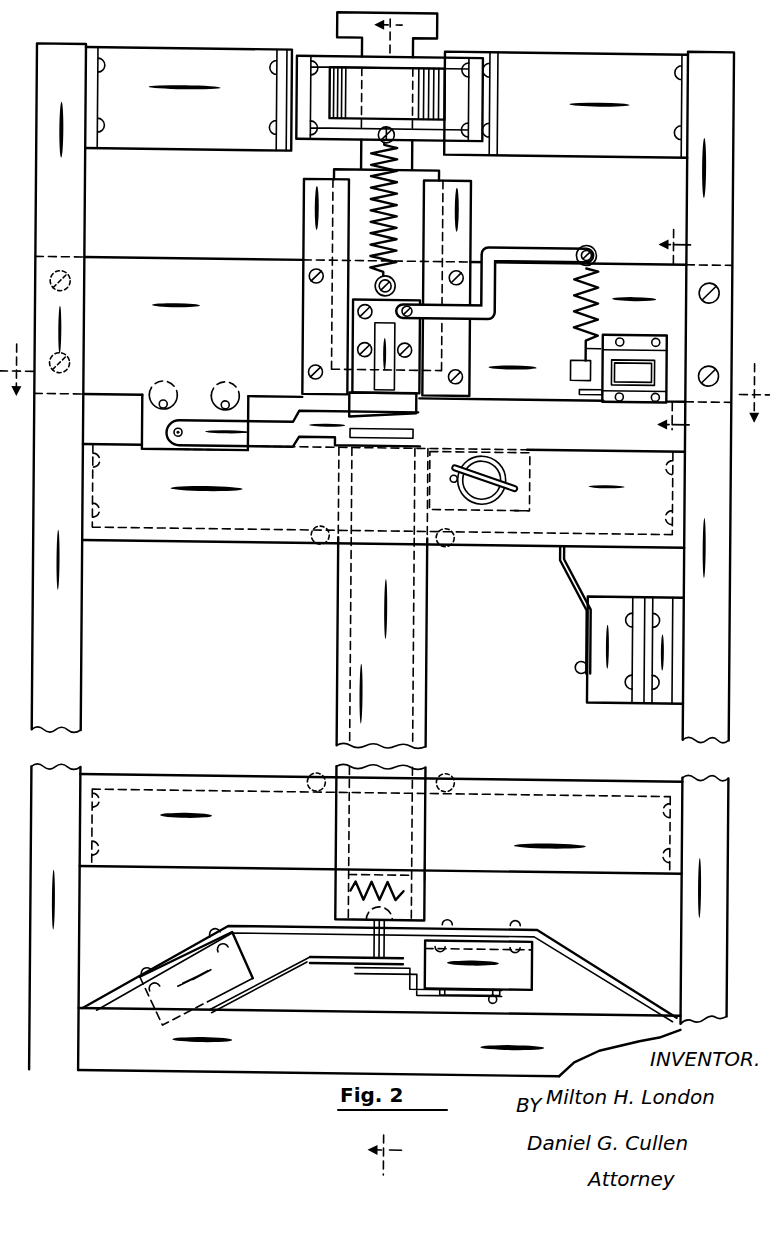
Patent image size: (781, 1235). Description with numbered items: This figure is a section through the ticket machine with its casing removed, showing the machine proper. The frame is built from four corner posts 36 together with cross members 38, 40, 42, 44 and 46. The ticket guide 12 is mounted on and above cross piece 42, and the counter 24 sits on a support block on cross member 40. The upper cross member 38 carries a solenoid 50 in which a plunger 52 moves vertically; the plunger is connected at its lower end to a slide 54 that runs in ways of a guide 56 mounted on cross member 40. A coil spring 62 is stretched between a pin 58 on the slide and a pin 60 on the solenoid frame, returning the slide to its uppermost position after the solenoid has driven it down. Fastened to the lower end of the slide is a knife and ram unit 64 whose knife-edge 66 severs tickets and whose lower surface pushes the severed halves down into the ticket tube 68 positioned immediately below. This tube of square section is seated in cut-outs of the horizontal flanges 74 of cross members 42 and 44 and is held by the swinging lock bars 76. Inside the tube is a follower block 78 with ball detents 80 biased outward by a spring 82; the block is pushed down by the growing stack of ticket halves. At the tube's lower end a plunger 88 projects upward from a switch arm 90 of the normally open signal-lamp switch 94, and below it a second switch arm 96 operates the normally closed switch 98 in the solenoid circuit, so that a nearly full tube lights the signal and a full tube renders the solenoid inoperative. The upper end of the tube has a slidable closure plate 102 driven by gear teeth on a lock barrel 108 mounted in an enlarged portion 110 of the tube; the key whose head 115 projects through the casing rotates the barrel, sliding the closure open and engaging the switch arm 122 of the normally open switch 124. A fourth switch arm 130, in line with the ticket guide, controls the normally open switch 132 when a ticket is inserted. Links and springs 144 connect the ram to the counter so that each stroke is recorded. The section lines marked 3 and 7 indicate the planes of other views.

The section line 3- 3 is at (396, 594).
The section line 7- 7 is at (385, 371).
The guide 12 is at (430, 428).
The counter 24 is at (622, 335).
The corner posts 36 is at (97, 678).
The upper cross member 38 is at (166, 148).
The cross member 40 is at (162, 258).
The cross member 42 is at (162, 541).
The cross member 44 is at (172, 776).
The cross member 46 is at (274, 1016).
The solenoid 50 is at (470, 98).
The plunger 52 is at (437, 22).
The slide 54 is at (442, 174).
The guide 56 is at (464, 238).
The pin 58 is at (373, 282).
The pin 60 is at (378, 138).
The coil spring 62 is at (427, 215).
The knife and ram unit 64 is at (362, 328).
The knife-edge 66 is at (434, 412).
The ticket receiver or tube 68 is at (430, 655).
The horizontal flanges 74 is at (487, 542).
The swinging lock bars 76 is at (400, 549).
The follower block 78 is at (372, 878).
The ball checks or detents 80 is at (420, 885).
The spring 82 is at (432, 866).
The plunger 88 is at (378, 944).
The switch arm 90 is at (327, 947).
The switch 94 is at (252, 966).
The switch arm 96 is at (392, 978).
The switch 98 is at (522, 960).
The closure plate 102 is at (497, 444).
The lock barrel 108 is at (463, 488).
The enlarged portion 110 is at (524, 512).
The head 115 is at (514, 478).
The switch arm 122 is at (572, 574).
The switch 124 is at (614, 590).
The switch arm 130 is at (308, 440).
The switch 132 is at (218, 388).
The links and springs 144 is at (597, 251).